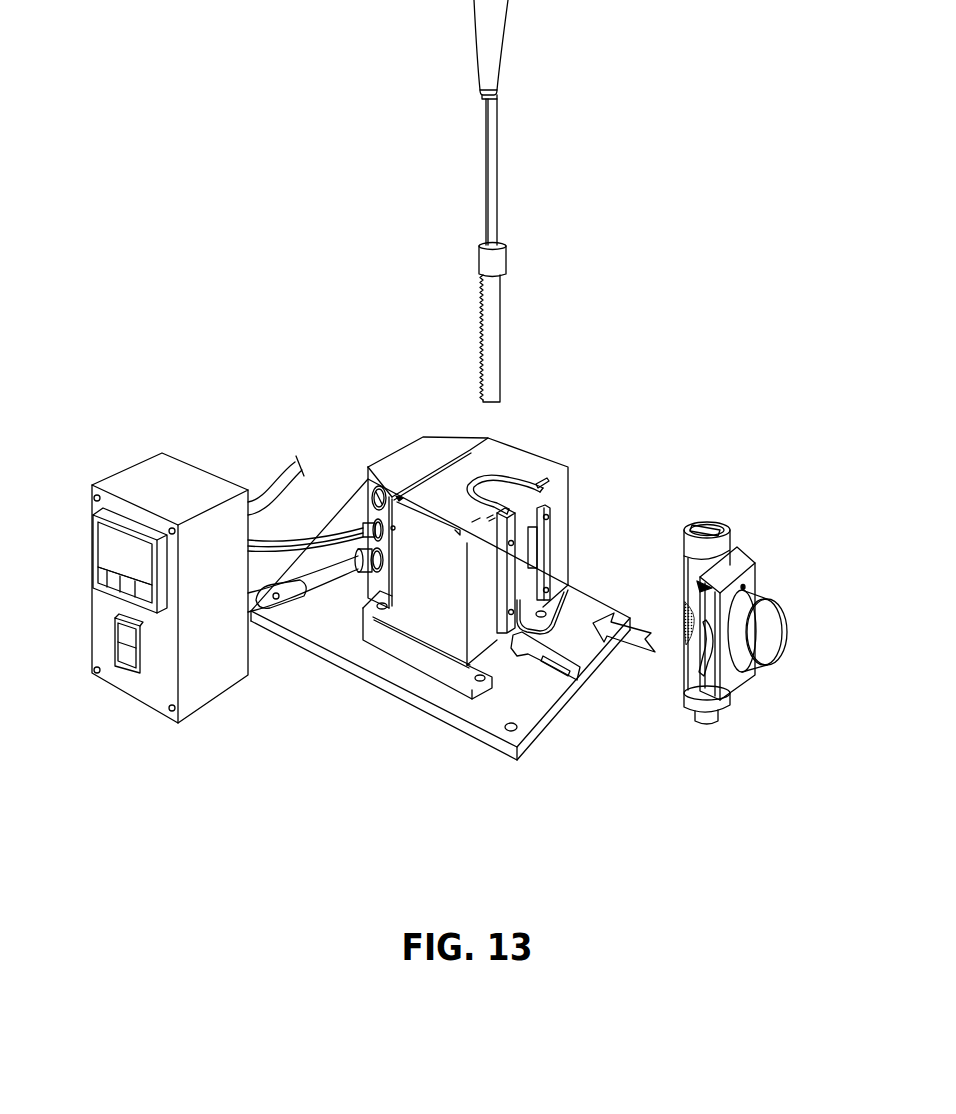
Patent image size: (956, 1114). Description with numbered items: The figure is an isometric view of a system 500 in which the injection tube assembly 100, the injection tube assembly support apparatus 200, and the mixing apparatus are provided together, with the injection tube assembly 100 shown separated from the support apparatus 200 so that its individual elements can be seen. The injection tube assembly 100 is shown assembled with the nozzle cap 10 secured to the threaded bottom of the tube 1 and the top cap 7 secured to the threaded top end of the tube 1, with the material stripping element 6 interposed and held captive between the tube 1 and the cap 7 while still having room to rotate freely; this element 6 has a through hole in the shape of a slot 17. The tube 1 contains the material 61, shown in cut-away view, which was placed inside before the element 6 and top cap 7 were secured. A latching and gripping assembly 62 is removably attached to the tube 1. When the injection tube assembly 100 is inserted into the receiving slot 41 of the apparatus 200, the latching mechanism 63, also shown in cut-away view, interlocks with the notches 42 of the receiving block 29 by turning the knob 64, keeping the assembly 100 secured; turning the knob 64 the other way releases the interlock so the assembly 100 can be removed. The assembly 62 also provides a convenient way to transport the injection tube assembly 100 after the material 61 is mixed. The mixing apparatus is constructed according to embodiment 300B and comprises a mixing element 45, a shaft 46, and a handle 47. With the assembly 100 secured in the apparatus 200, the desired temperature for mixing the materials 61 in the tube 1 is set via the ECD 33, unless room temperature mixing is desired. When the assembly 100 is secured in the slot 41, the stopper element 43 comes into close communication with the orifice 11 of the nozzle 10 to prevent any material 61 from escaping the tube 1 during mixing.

The system 500 is at (74, 777).
The mixing apparatus embodiment 300B is at (517, 158).
The handle 47 is at (486, 49).
The shaft 46 is at (492, 192).
The mixing element 45 is at (493, 330).
The ECD 33 is at (186, 433).
The injection tube assembly support apparatus 200 is at (318, 680).
The notches 42 is at (535, 543).
The receiving slot 41 is at (536, 500).
The receiving block 29 is at (529, 487).
The stopper element 43 is at (538, 663).
The injection tube assembly 100 is at (726, 433).
The top cap 7 is at (684, 532).
The material stripping element 6 is at (713, 528).
The slot 17 is at (697, 526).
The tube 1 is at (692, 572).
The material 61 is at (684, 612).
The latching and gripping assembly 62 is at (790, 597).
The latching mechanism 63 is at (707, 667).
The knob 64 is at (775, 655).
The nozzle cap 10 is at (720, 707).
The orifice 11 is at (707, 725).